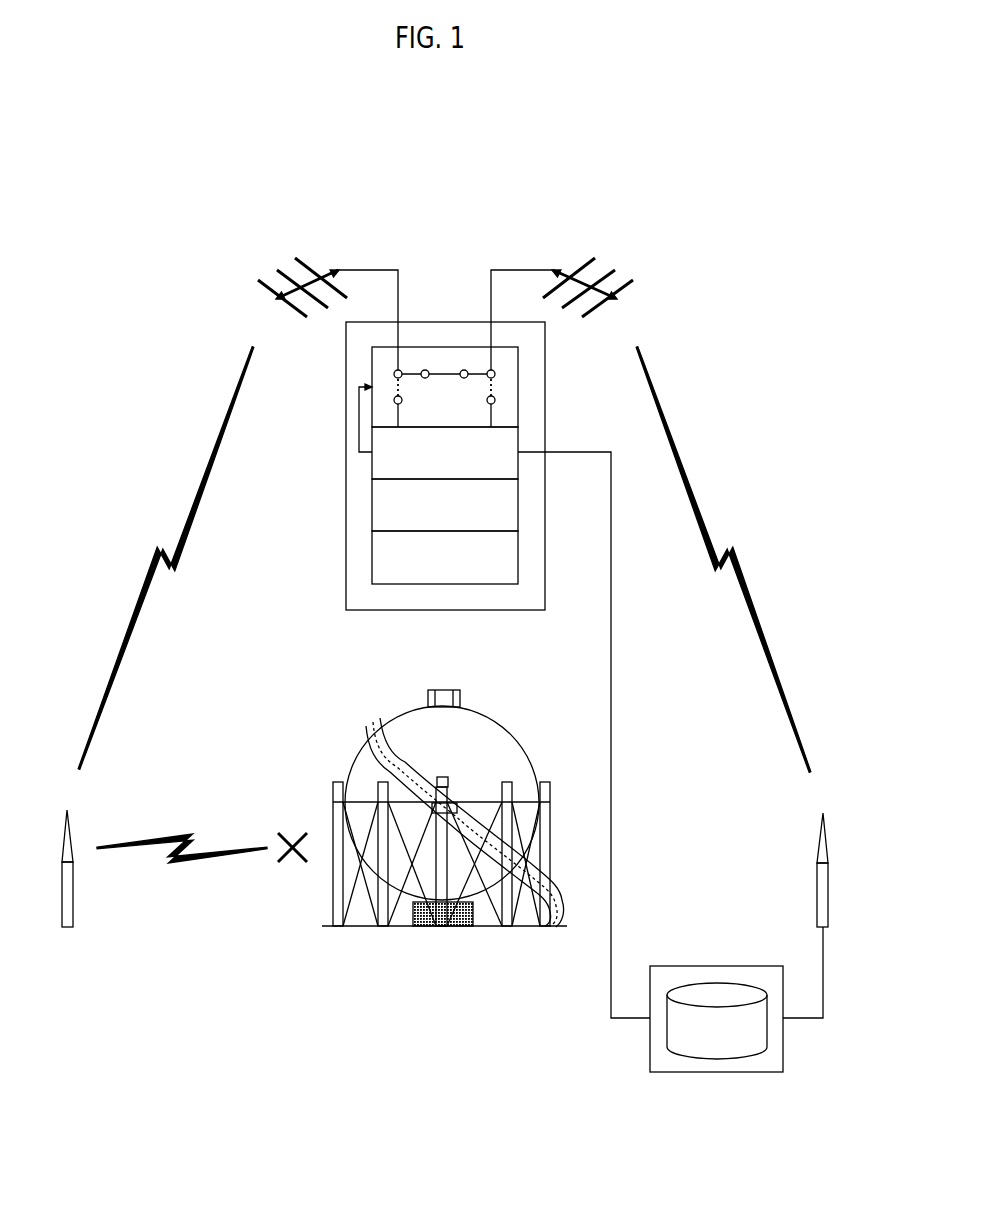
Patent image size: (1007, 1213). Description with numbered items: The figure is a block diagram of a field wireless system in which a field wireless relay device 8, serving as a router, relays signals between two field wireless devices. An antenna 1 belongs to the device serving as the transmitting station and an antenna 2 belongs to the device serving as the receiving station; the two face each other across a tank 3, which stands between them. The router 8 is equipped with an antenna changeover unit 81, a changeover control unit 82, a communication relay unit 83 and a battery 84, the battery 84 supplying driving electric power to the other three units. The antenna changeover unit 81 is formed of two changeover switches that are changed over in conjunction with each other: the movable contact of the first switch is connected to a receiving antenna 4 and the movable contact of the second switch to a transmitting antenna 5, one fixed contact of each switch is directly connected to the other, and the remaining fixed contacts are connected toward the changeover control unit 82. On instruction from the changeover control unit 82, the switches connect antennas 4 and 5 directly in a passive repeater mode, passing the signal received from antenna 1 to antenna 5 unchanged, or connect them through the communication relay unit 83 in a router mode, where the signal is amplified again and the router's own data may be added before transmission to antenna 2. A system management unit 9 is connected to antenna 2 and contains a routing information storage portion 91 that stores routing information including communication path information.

The antenna 1 is at (75, 890).
The antenna 2 is at (817, 907).
The tank 3 is at (527, 752).
The antenna 4 is at (315, 262).
The antenna 5 is at (568, 263).
The field wireless relay device 8 is at (452, 318).
The antenna changeover unit 81 is at (372, 373).
The changeover control unit 82 is at (372, 470).
The communication relay unit 83 is at (372, 510).
The battery 84 is at (372, 562).
The system management unit 9 is at (677, 963).
The routing information storage portion 91 is at (722, 1013).